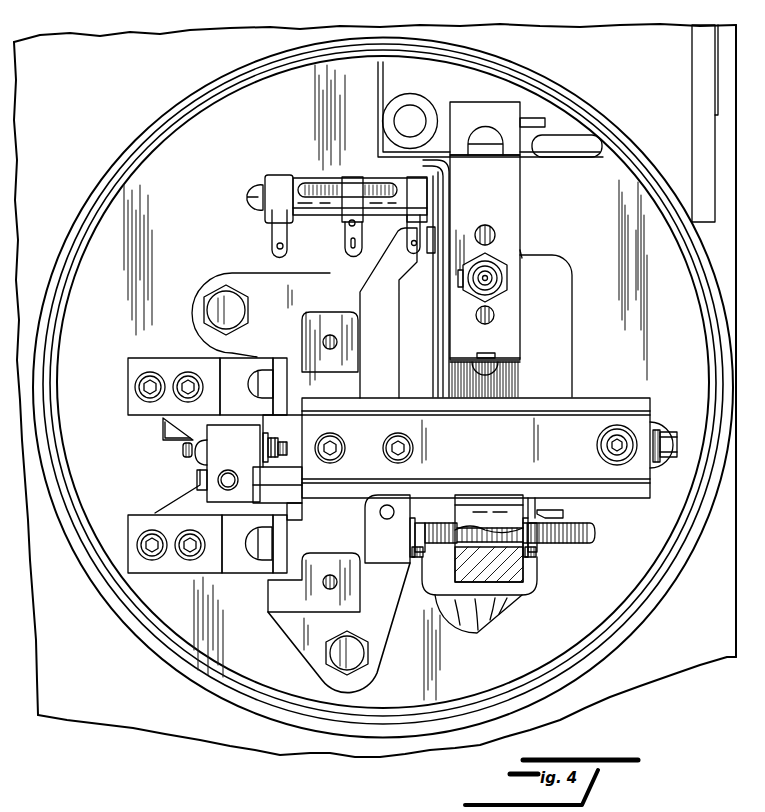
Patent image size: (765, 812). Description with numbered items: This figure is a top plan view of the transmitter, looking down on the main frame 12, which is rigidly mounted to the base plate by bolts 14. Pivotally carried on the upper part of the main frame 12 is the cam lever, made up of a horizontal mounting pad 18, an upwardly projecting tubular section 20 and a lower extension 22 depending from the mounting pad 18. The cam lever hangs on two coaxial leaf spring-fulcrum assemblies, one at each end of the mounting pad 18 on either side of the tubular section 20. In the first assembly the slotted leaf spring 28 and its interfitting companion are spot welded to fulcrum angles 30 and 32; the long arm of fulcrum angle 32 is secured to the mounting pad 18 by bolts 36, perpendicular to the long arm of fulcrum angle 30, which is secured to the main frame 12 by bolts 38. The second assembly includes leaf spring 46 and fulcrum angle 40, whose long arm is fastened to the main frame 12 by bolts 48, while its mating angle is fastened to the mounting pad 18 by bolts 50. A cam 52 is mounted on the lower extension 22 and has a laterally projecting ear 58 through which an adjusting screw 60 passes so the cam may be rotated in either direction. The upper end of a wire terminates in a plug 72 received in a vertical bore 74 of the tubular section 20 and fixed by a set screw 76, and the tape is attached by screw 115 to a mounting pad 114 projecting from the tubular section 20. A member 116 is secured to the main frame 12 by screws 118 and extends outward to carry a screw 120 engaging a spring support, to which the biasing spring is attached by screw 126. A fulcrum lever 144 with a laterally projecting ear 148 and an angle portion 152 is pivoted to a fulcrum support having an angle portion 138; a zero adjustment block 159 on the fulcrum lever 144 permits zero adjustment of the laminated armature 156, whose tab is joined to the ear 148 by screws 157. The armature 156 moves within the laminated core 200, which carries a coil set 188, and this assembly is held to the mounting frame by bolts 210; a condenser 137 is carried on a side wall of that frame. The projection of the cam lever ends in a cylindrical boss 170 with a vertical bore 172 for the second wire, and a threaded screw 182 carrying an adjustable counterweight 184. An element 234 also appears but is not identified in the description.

The main frame 12 is at (352, 354).
The bolts 14 is at (242, 306).
The horizontal mounting pad 18 is at (181, 493).
The tubular section 20 is at (233, 463).
The lower extension 22 is at (168, 425).
The leaf spring 28 is at (240, 573).
The fulcrum angle 30 is at (284, 548).
The fulcrum angle 32 is at (173, 573).
The bolts 36 is at (170, 533).
The bolts 38 is at (255, 541).
The fulcrum angle 40 is at (283, 400).
The leaf spring 46 is at (238, 352).
The bolts 48 is at (252, 394).
The bolts 50 is at (186, 372).
The cam 52 is at (183, 450).
The laterally projecting ear 58 is at (164, 434).
The screw 60 is at (160, 420).
The plug 72 is at (240, 474).
The vertical bore 74 is at (252, 490).
The set screw 76 is at (196, 483).
The mounting pad 114 is at (268, 438).
The screw 115 is at (230, 469).
The member 116 is at (476, 448).
The screws 118 is at (384, 448).
The screw 120 is at (598, 454).
The screw 126 is at (680, 438).
The condenser 137 is at (529, 592).
The angle portion 138 is at (468, 112).
The fulcrum lever 144 is at (510, 207).
The laterally projecting ear 148 is at (493, 352).
The angle portion 152 is at (492, 160).
The armature 156 is at (478, 318).
The screws 157 is at (482, 356).
The zero adjustment block 159 is at (508, 280).
The cylindrical boss 170 is at (383, 565).
The vertical bore 172 is at (388, 519).
The threaded screw 182 is at (560, 544).
The counterweight 184 is at (524, 568).
The coil set 188 is at (560, 267).
The core 200 is at (522, 380).
The bolts 210 is at (526, 236).
The clip 234 is at (196, 470).